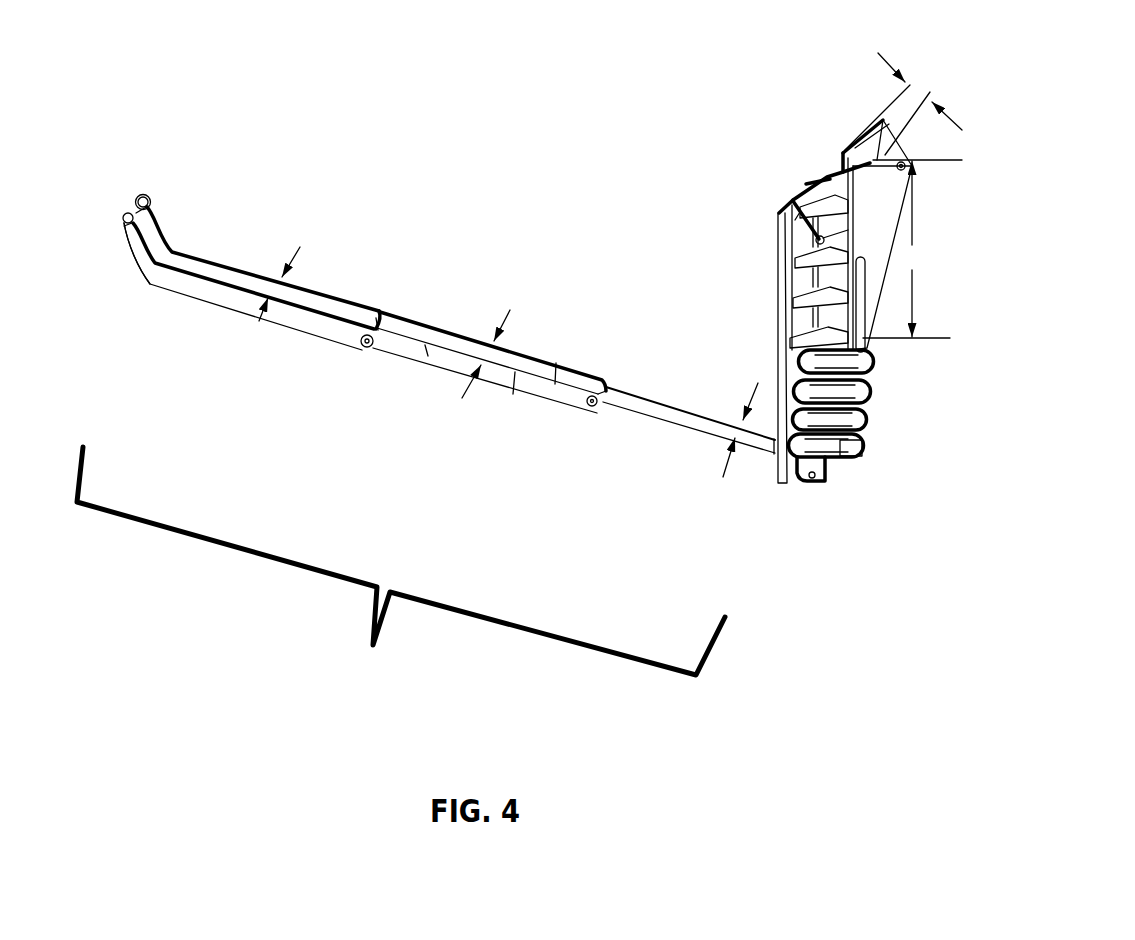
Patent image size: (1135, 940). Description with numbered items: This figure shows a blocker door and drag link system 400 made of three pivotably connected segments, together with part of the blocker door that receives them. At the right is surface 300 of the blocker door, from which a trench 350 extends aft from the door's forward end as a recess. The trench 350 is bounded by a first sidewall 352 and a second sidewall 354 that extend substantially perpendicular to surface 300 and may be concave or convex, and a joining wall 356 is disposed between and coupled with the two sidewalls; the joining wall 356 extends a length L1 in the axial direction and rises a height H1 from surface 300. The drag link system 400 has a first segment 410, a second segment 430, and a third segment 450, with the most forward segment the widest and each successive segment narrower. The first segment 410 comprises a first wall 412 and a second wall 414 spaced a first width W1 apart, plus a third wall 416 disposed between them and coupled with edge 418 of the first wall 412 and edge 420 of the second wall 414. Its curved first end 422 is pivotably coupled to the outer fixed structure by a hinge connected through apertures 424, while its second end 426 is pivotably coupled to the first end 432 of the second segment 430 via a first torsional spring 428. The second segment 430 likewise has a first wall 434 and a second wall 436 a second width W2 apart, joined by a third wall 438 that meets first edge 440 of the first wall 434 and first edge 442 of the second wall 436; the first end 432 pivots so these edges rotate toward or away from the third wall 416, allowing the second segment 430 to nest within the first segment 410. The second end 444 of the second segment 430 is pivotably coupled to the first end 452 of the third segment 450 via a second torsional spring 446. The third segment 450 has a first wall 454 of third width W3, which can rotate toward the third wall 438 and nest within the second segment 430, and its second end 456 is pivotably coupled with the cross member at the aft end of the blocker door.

The surface 300 is at (781, 210).
The trench 350 is at (831, 153).
The first sidewall 352 is at (806, 179).
The second sidewall 354 is at (849, 148).
The joining wall 356 is at (838, 166).
The drag link system 400 is at (358, 660).
The first segment 410 is at (288, 215).
The first wall 412 is at (180, 288).
The second wall 414 is at (307, 283).
The third wall 416 is at (142, 197).
The edge 418 is at (149, 200).
The edge 420 is at (123, 218).
The first end 422 is at (140, 283).
The apertures 424 is at (150, 210).
The second end 426 is at (360, 295).
The first torsional spring 428 is at (361, 348).
The second segment 430 is at (508, 278).
The first end 432 is at (383, 367).
The first wall 434 is at (427, 352).
The second wall 436 is at (445, 330).
The third wall 438 is at (402, 333).
The first edge 440 is at (517, 393).
The first edge 442 is at (557, 377).
The second end 444 is at (592, 372).
The second torsional spring 446 is at (592, 406).
The third segment 450 is at (711, 387).
The first end 452 is at (607, 423).
The first wall 454 is at (677, 416).
The second end 456 is at (765, 465).